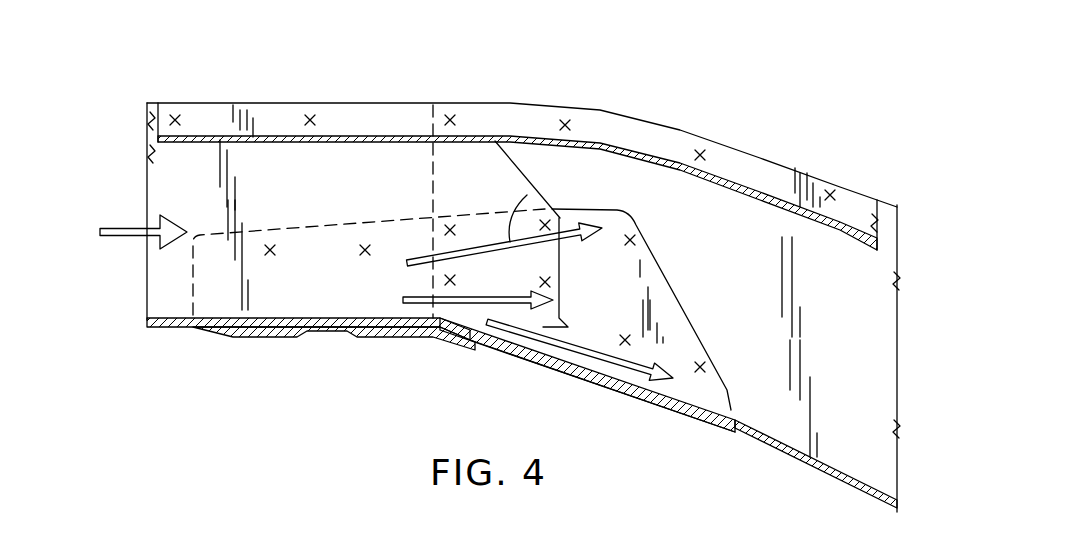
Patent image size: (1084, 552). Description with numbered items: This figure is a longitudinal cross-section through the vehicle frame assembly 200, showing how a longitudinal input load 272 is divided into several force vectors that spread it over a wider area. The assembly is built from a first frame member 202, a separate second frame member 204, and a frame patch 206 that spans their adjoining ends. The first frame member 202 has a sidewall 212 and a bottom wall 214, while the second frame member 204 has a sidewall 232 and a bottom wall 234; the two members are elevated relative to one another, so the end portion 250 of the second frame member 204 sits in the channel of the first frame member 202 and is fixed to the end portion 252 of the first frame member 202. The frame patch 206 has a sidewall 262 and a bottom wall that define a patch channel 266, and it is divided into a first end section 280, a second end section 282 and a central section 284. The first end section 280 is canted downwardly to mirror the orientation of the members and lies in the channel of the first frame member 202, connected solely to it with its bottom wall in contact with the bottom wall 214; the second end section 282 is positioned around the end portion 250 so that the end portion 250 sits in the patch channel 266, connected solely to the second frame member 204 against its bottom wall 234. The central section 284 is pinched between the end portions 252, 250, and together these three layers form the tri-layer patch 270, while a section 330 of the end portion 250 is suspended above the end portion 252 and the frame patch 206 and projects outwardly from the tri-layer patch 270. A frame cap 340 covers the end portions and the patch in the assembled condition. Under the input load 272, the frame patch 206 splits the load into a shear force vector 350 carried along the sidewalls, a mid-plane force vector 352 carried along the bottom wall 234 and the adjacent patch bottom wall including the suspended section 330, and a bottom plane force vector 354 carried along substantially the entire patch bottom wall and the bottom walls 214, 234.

The vehicle frame assembly 200 is at (700, 108).
The first frame member 202 is at (837, 467).
The second frame member 204 is at (208, 160).
The frame patch 206 is at (290, 347).
The sidewall 212 is at (832, 258).
The bottom wall 214 is at (780, 447).
The sidewall 232 is at (348, 163).
The bottom wall 234 is at (378, 320).
The end portion 250 is at (497, 167).
The end portion 252 is at (528, 155).
The sidewall 262 is at (673, 322).
The patch channel 266 is at (680, 418).
The tri-layer patch 270 is at (450, 350).
The input load 272 is at (145, 262).
The first end section 280 is at (707, 410).
The second end section 282 is at (255, 318).
The central section 284 is at (440, 342).
The section 330 is at (563, 318).
The frame cap 340 is at (612, 142).
The force vector 350 is at (527, 195).
The force vector 352 is at (482, 293).
The force vector 354 is at (632, 370).